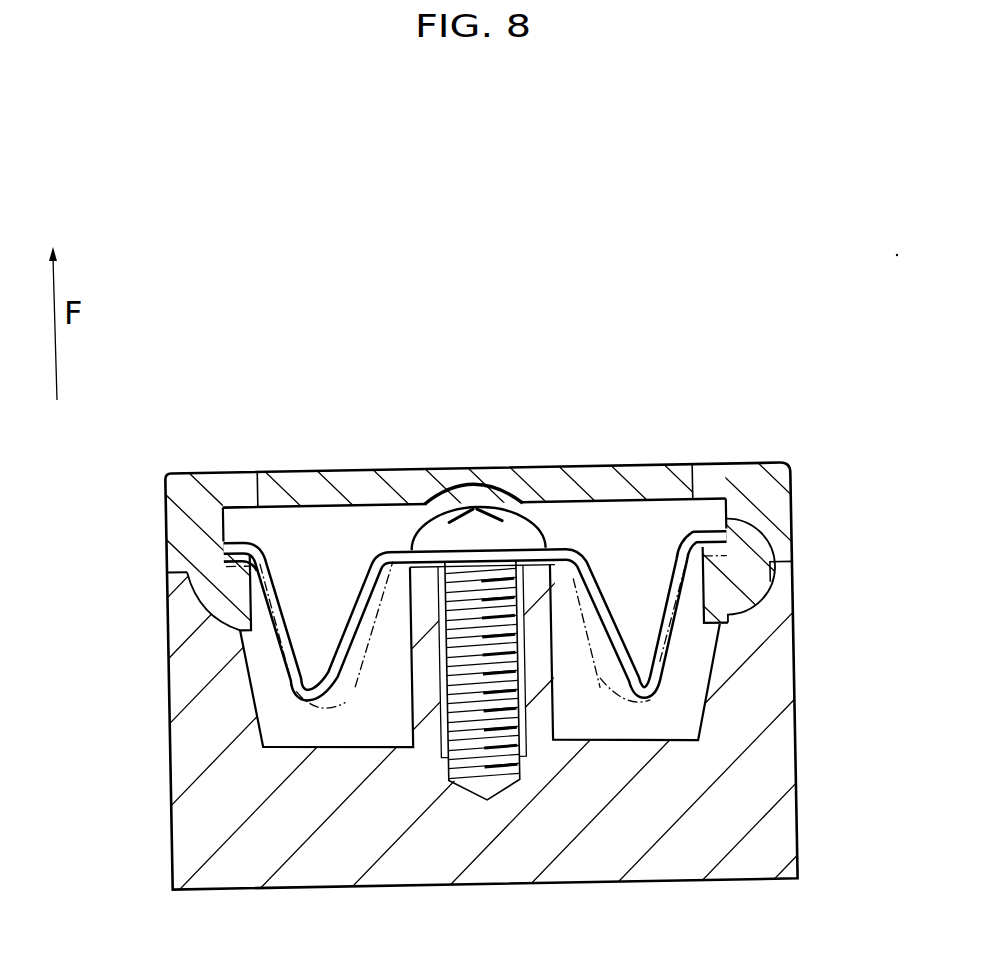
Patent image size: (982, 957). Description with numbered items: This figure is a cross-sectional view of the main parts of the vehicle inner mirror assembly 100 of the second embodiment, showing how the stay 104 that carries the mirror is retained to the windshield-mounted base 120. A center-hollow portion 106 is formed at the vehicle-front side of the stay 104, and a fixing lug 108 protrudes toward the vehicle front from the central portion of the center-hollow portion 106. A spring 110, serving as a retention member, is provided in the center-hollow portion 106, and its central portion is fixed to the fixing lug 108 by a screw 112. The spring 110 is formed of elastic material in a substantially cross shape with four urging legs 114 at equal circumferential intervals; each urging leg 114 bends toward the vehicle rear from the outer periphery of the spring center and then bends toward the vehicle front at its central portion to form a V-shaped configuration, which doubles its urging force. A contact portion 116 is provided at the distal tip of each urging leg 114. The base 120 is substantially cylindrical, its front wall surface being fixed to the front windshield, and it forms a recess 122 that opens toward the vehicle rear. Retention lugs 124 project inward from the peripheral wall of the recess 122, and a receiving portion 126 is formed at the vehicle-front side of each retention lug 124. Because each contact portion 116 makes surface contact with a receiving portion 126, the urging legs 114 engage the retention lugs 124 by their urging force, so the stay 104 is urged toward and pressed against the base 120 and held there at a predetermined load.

The vehicle inner mirror assembly 100 is at (496, 168).
The stay 104 is at (170, 832).
The center-hollow portion 106 is at (693, 699).
The fixing lug 108 is at (420, 670).
The spring 110 is at (401, 530).
The screw 112 is at (524, 500).
The urging leg 114 is at (352, 640).
The contact portion 116 is at (255, 537).
The base 120 is at (607, 455).
The recess 122 is at (354, 512).
The retention lug 124 is at (233, 580).
The receiving portion 126 is at (223, 531).